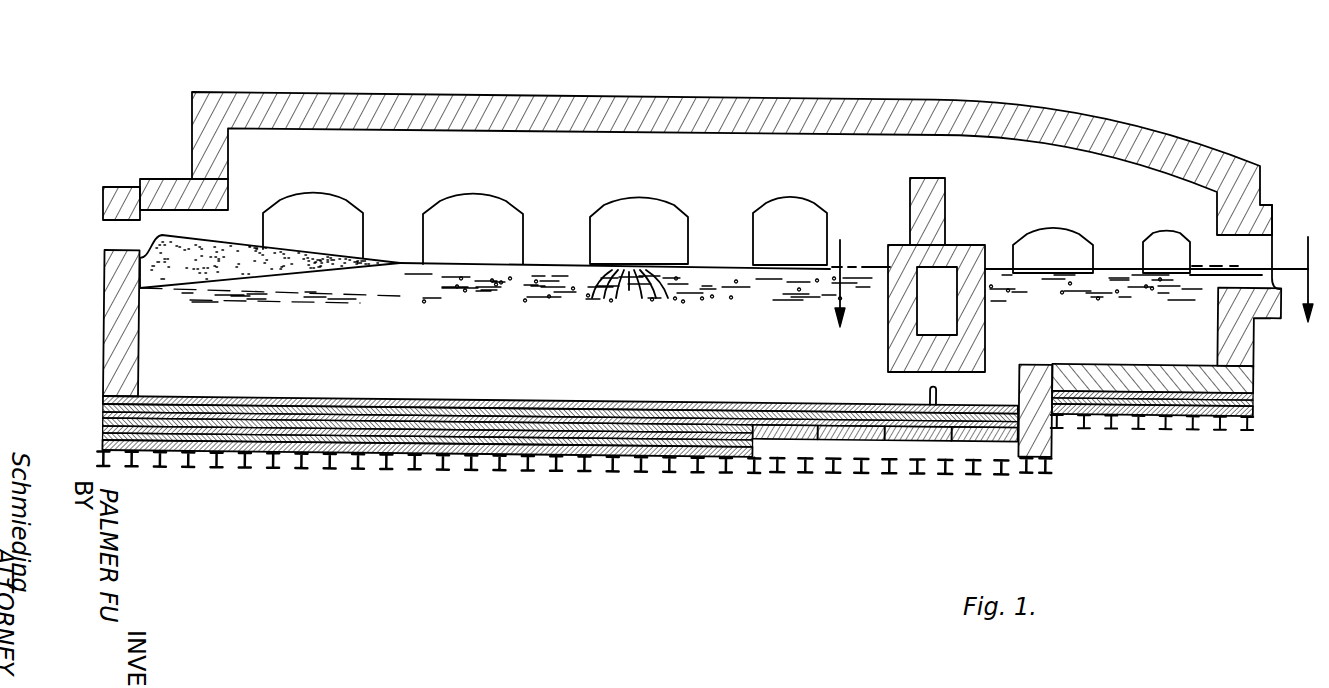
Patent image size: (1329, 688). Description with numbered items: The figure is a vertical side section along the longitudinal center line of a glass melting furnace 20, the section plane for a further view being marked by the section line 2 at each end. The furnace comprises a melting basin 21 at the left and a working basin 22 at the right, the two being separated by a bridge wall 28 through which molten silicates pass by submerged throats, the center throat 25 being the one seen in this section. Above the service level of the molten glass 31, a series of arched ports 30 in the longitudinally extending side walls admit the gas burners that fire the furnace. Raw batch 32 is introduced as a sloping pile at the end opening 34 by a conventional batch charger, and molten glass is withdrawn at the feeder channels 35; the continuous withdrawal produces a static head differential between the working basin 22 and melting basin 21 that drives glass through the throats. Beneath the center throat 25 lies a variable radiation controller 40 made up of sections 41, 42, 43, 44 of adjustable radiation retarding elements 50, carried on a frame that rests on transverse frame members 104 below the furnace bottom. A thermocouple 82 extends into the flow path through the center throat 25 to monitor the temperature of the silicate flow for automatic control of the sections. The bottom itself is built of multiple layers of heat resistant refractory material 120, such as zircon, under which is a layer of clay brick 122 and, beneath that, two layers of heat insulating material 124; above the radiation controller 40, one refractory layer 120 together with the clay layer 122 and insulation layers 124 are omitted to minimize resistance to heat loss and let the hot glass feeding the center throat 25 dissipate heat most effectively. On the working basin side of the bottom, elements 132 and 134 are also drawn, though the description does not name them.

The section line 2- 2 is at (1072, 267).
The glass melting furnace 20 is at (742, 98).
The melting basin 21 is at (163, 330).
The working basin 22 is at (1256, 338).
The center throat 25 is at (962, 390).
The bridge wall 28 is at (962, 247).
The ports 30 is at (292, 213).
The molten glass 31 is at (712, 277).
The batch 32 is at (222, 268).
The end opening 34 is at (113, 230).
The feeder channels 35 is at (1252, 253).
The variable radiation controller 40 is at (853, 446).
The section of adjustable radiation retarding elements 41 is at (770, 442).
The section of adjustable radiation retarding elements 42 is at (830, 410).
The section of adjustable radiation retarding elements 43 is at (910, 447).
The section of adjustable radiation retarding elements 44 is at (990, 442).
The adjustable radiation retarding elements 50 is at (790, 443).
The thermocouple 82 is at (928, 391).
The transverse frame members 104 is at (642, 465).
The layers of heat resistant refractory material 120 is at (935, 500).
The layer of clay brick 122 is at (492, 448).
The layers of heat insulating material 124 is at (562, 445).
The outlet floor layers 132 is at (1057, 428).
The outlet floor slab 134 is at (1083, 370).